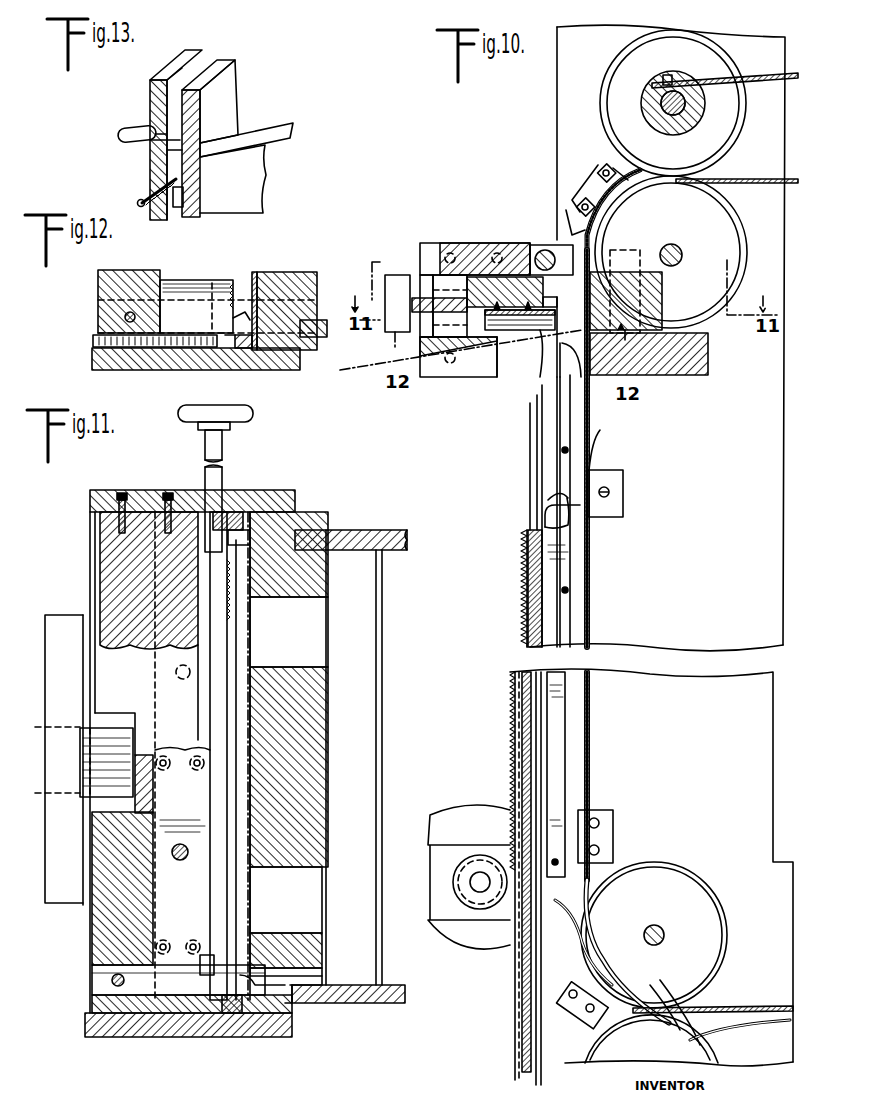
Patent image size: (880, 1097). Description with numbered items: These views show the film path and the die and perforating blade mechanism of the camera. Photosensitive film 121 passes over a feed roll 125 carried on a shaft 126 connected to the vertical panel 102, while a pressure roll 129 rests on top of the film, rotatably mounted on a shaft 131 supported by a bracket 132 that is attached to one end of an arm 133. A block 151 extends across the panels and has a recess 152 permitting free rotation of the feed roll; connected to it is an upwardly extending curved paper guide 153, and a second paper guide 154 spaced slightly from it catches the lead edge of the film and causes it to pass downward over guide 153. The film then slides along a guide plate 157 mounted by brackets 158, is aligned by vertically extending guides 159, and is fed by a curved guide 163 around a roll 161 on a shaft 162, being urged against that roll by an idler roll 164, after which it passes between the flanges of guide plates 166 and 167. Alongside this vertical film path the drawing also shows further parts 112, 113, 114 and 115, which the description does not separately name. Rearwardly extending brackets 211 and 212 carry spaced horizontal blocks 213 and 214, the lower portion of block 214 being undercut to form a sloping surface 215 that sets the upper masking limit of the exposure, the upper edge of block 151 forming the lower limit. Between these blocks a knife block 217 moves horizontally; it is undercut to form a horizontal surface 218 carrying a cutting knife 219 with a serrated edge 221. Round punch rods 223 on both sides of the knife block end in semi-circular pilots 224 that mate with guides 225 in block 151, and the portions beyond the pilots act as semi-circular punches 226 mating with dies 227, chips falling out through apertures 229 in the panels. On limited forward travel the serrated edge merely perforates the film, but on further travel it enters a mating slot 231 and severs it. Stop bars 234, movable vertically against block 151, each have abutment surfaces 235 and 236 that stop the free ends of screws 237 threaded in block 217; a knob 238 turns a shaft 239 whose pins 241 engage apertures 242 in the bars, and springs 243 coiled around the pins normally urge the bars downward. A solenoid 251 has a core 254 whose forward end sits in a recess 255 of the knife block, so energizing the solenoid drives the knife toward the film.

In FIG. 11, the panel 102 is at (398, 1003).
In FIG. 10, the sprocket 112 is at (480, 870).
In FIG. 10, the rack 113 is at (518, 615).
In FIG. 10, the guide strip 114 is at (535, 578).
In FIG. 10, the hook 115 is at (545, 498).
In FIG. 12, the photosensitive film 121 is at (255, 280).
In FIG. 11, the photosensitive film 121 is at (245, 635).
In FIG. 10, the photosensitive film 121 is at (752, 177).
In FIG. 10, the feed roll 125 is at (738, 225).
In FIG. 10, the shaft 126 is at (683, 255).
In FIG. 10, the pressure roll 129 is at (722, 128).
In FIG. 10, the shaft 131 is at (693, 75).
In FIG. 10, the bracket 132 is at (670, 120).
In FIG. 10, the arm 133 is at (755, 72).
In FIG. 12, the block 151 is at (287, 285).
In FIG. 11, the block 151 is at (320, 730).
In FIG. 10, the block 151 is at (700, 360).
In FIG. 11, the recess 152 is at (315, 640).
In FIG. 10, the curved paper guide 153 is at (600, 221).
In FIG. 10, the second paper guide 154 is at (572, 202).
In FIG. 10, the guide plate 157 is at (591, 612).
In FIG. 10, the bracket 158 is at (625, 506).
In FIG. 10, the vertically extending guide 159 is at (560, 744).
In FIG. 10, the roll 161 is at (672, 880).
In FIG. 10, the shaft 162 is at (660, 918).
In FIG. 10, the curved guide 163 is at (567, 965).
In FIG. 10, the idler roll 164 is at (597, 1050).
In FIG. 10, the guide plate 166 is at (745, 1006).
In FIG. 10, the guide plate 167 is at (768, 1020).
In FIG. 11, the bracket 211 is at (152, 490).
In FIG. 11, the bracket 212 is at (95, 1037).
In FIG. 10, the horizontal block 213 is at (470, 243).
In FIG. 10, the horizontal block 214 is at (435, 345).
In FIG. 10, the sloping surface 215 is at (472, 355).
In FIG. 11, the knife block 217 is at (100, 577).
In FIG. 10, the knife block 217 is at (485, 277).
In FIG. 10, the horizontal surface 218 is at (522, 330).
In FIG. 12, the cutting knife 219 is at (226, 283).
In FIG. 11, the cutting knife 219 is at (175, 960).
In FIG. 10, the cutting knife 219 is at (540, 338).
In FIG. 11, the serrated edge 221 is at (230, 618).
In FIG. 12, the punch rod 223 is at (180, 308).
In FIG. 11, the punch rod 223 is at (100, 535).
In FIG. 11, the semi-circular pilot 224 is at (242, 535).
In FIG. 11, the guide 225 is at (300, 1008).
In FIG. 12, the semi-circular punch 226 is at (240, 320).
In FIG. 11, the semi-circular punch 226 is at (225, 990).
In FIG. 11, the die 227 is at (300, 970).
In FIG. 11, the aperture 229 is at (312, 983).
In FIG. 10, the mating slot 231 is at (632, 300).
In FIG. 13, the stop bar 234 is at (185, 76).
In FIG. 12, the stop bar 234 is at (232, 348).
In FIG. 11, the stop bar 234 is at (232, 512).
In FIG. 13, the abutment surface 235 is at (170, 162).
In FIG. 13, the abutment surface 236 is at (184, 200).
In FIG. 13, the screw 237 is at (139, 200).
In FIG. 12, the screw 237 is at (93, 341).
In FIG. 11, the knob 238 is at (253, 413).
In FIG. 13, the shaft 239 is at (136, 126).
In FIG. 11, the shaft 239 is at (222, 455).
In FIG. 13, the pin 241 is at (150, 150).
In FIG. 13, the aperture 242 is at (210, 138).
In FIG. 11, the spring 243 is at (222, 475).
In FIG. 10, the solenoid 251 is at (392, 262).
In FIG. 11, the core 254 is at (32, 795).
In FIG. 10, the core 254 is at (440, 275).
In FIG. 11, the recess 255 is at (105, 808).